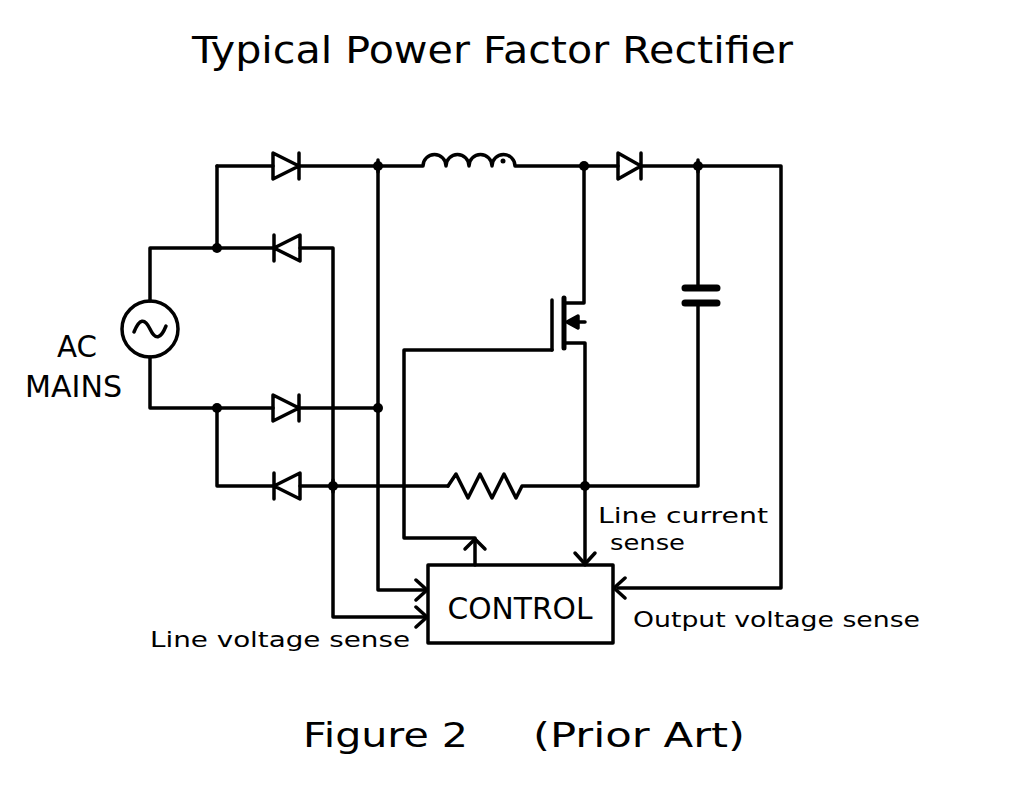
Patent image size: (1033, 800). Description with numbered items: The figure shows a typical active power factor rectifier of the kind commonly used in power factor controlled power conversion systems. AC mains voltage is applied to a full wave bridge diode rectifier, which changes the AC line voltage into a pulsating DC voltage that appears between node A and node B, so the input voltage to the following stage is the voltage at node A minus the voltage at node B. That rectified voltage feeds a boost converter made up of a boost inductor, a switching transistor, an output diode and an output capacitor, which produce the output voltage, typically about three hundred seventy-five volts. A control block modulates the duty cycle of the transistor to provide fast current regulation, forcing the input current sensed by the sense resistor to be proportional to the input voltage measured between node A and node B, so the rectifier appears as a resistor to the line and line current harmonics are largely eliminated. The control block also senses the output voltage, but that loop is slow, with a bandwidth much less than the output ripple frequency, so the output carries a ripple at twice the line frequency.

The rectified input node A is at (374, 147).
The rectified input node B is at (315, 513).